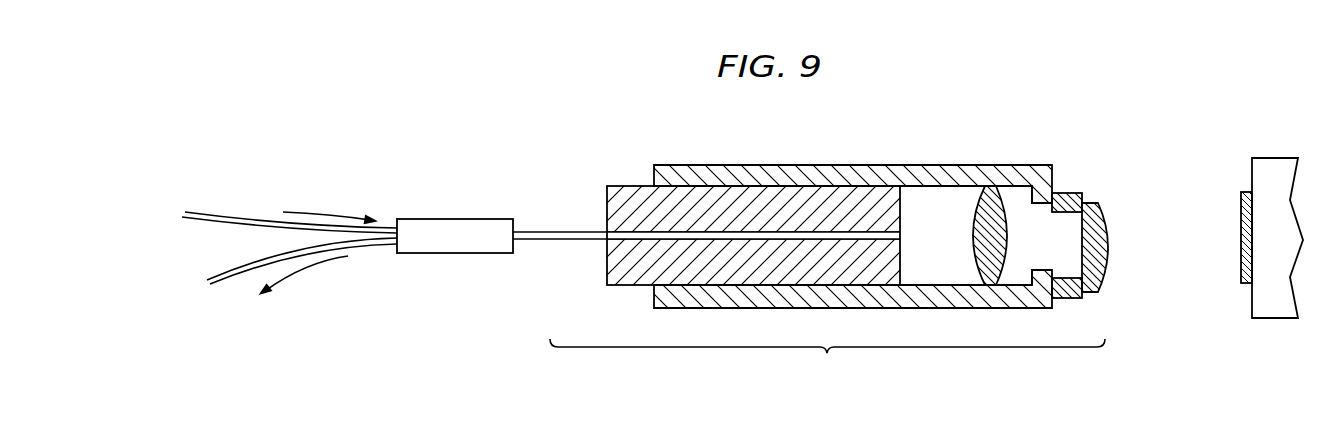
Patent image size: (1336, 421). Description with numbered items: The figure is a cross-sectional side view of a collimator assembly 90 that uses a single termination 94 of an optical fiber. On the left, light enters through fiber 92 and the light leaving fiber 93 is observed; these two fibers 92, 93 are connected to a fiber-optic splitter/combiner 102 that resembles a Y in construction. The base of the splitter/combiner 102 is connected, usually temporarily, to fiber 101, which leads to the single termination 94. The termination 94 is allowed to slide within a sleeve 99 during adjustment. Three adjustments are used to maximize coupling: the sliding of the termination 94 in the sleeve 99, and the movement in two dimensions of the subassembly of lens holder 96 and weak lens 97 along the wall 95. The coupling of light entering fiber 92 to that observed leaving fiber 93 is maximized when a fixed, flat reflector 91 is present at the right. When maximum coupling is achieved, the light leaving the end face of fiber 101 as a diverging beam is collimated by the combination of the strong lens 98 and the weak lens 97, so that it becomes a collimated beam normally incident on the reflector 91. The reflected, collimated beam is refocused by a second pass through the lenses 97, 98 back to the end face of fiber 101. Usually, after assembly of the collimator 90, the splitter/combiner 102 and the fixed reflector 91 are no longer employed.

The collimator assembly 90 is at (827, 364).
The fixed, flat reflector 91 is at (1241, 270).
The fiber 92 is at (204, 216).
The fiber 93 is at (241, 277).
The single termination 94 is at (890, 226).
The wall 95 is at (1031, 164).
The lens holder 96 is at (1063, 192).
The weak lens 97 is at (1110, 232).
The strong lens 98 is at (963, 212).
The sleeve 99 is at (695, 164).
The fiber 101 is at (554, 231).
The fiber-optic splitter/combiner 102 is at (445, 219).